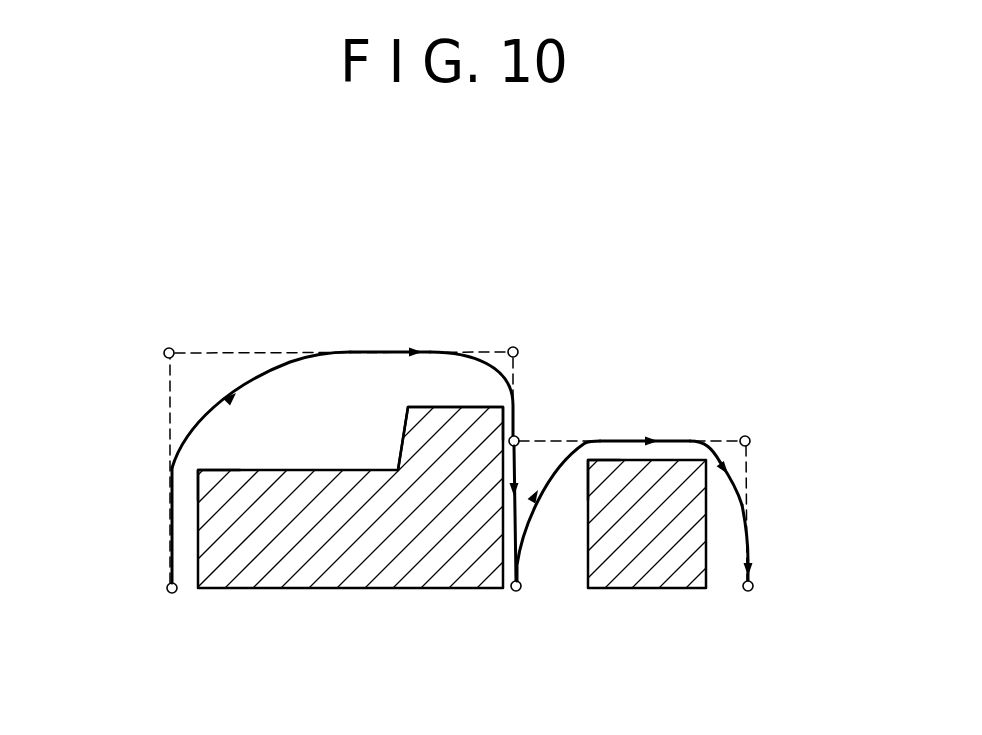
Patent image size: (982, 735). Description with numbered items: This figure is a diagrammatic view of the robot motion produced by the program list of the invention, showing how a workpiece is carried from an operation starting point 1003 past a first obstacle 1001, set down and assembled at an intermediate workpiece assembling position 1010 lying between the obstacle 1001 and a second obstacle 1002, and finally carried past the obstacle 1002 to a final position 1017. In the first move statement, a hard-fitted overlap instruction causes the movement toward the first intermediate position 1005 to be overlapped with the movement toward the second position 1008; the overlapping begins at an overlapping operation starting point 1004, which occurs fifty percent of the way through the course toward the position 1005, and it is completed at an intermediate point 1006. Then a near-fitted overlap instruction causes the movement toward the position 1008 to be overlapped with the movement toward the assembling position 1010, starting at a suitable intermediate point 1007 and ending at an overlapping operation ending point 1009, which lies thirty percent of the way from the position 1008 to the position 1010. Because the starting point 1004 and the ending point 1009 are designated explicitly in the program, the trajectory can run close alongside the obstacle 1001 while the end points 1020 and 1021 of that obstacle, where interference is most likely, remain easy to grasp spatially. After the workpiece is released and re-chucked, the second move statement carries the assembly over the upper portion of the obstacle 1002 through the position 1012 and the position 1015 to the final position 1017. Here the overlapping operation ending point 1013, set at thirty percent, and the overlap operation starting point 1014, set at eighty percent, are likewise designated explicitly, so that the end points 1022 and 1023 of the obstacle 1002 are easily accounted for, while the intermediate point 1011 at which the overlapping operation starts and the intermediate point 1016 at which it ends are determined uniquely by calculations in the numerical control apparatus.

The obstacle 1001 is at (257, 590).
The obstacle 1002 is at (658, 590).
The operation starting point P0 1003 is at (166, 590).
The overlapping operation starting point 1004 is at (168, 472).
The position P1 1005 is at (163, 353).
The intermediate point 1006 is at (327, 352).
The intermediate point 1007 is at (418, 348).
The position P2 1008 is at (508, 352).
The overlapping operation ending point 1009 is at (515, 398).
The intermediate workpiece assembling position P3 1010 is at (511, 590).
The intermediate point 1011 is at (521, 552).
The position P4 1012 is at (519, 440).
The overlapping operation ending point 1013 is at (590, 440).
The overlap operation starting point 1014 is at (707, 440).
The position P5 1015 is at (750, 441).
The intermediate point 1016 is at (748, 512).
The final position P6 1017 is at (748, 592).
The end point of obstacle 1020 is at (200, 468).
The end point of obstacle 1021 is at (497, 403).
The end point of obstacle 1022 is at (588, 462).
The end point of obstacle 1023 is at (743, 483).